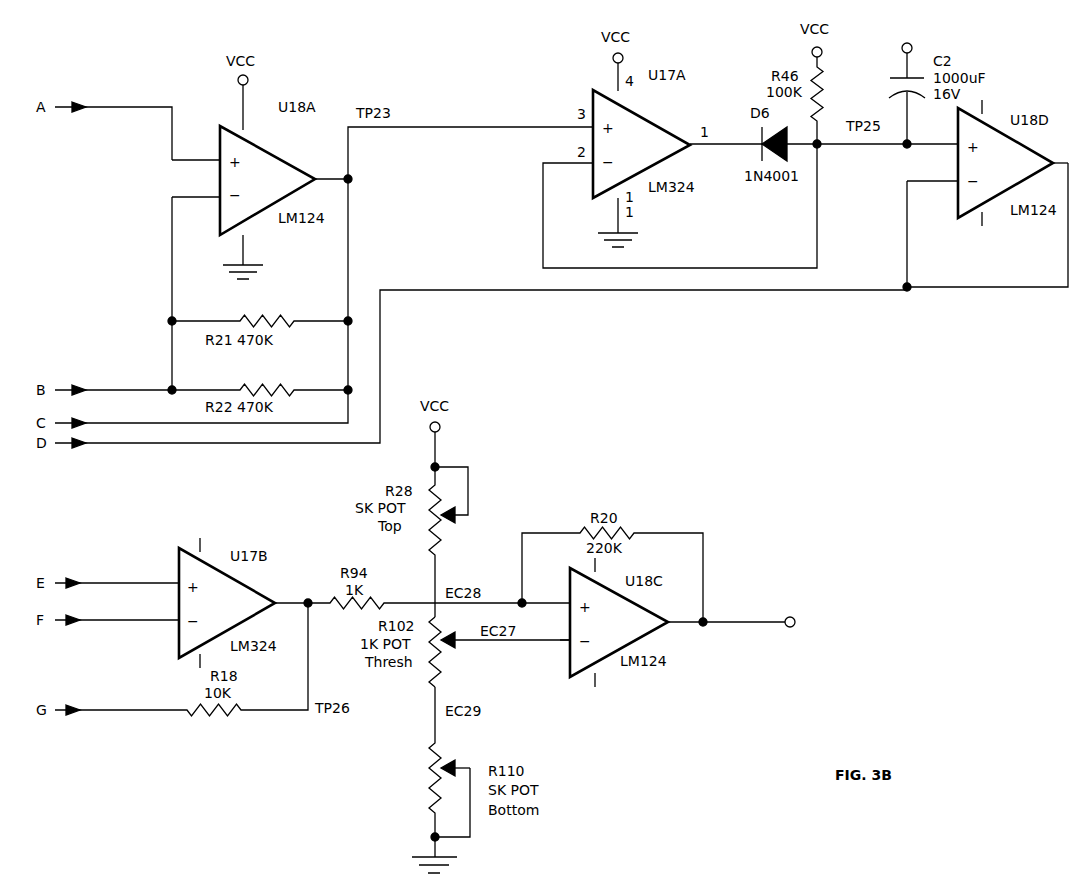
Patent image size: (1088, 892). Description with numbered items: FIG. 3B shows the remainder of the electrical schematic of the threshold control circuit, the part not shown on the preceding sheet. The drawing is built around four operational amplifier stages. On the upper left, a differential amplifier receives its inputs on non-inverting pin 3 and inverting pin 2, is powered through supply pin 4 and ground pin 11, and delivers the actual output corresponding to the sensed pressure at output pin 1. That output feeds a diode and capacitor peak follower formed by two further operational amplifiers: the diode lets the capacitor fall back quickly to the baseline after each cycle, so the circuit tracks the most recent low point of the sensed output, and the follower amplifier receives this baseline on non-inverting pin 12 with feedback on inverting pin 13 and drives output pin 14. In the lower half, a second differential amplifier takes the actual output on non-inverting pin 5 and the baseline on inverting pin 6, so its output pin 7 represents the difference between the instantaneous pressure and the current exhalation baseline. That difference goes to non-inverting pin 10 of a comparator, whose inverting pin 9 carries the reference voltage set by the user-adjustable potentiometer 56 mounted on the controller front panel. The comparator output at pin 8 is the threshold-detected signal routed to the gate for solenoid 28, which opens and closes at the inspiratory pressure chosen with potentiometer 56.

The potentiometer 56 is at (437, 666).
The solenoid 28 is at (801, 622).
The op-amp output pin 1 is at (331, 169).
The op-amp inverting input pin 2 is at (196, 187).
The op-amp non-inverting input pin 3 is at (196, 151).
The op-amp supply pin 4 is at (251, 107).
The op-amp non-inverting input pin 5 is at (117, 573).
The op-amp inverting input pin 6 is at (117, 610).
The op-amp output pin 7 is at (291, 593).
The op-amp output pin 8 is at (685, 612).
The op-amp inverting input pin 9 is at (561, 631).
The op-amp non-inverting input pin 10 is at (546, 594).
The op-amp ground pin 11 is at (243, 253).
The op-amp non-inverting input pin 12 is at (932, 133).
The op-amp inverting input pin 13 is at (932, 170).
The op-amp output pin 14 is at (1064, 154).